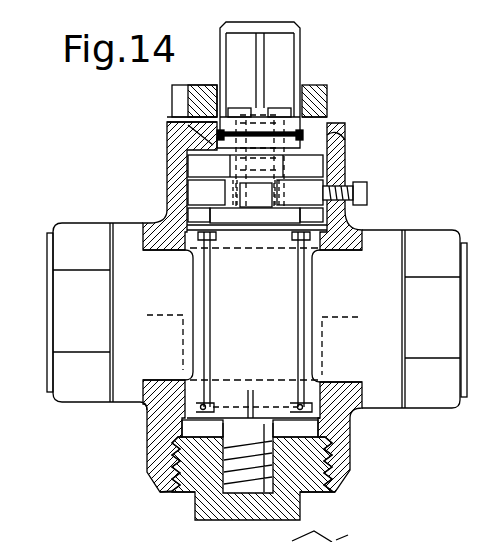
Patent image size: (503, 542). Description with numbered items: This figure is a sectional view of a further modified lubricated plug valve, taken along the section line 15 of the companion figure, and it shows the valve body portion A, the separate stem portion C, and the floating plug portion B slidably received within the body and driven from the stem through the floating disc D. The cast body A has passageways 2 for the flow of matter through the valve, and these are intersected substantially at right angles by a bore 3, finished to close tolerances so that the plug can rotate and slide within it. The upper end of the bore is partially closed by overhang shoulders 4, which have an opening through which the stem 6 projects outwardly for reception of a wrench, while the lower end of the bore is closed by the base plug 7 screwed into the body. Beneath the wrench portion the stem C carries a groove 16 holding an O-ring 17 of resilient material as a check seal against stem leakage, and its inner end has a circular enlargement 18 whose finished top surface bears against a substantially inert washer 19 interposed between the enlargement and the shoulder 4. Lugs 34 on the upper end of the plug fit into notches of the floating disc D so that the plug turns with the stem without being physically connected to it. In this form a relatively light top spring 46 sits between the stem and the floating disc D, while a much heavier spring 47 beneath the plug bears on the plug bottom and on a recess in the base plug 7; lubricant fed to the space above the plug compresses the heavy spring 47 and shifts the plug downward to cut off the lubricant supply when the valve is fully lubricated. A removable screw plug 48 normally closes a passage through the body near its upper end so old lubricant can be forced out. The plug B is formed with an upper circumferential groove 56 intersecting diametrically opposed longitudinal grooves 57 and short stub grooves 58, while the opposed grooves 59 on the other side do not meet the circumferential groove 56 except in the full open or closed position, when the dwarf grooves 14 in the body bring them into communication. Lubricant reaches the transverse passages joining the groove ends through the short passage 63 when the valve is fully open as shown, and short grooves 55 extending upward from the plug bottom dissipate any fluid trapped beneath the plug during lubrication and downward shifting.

The passageways 2 is at (252, 316).
The bore 3 is at (345, 165).
The overhang shoulders 4 is at (213, 145).
The stem 6 is at (301, 57).
The base plug 7 is at (304, 517).
The dwarf grooves 14 is at (216, 238).
The section line 15 is at (46, 310).
The groove 16 is at (183, 118).
The O-ring 17 is at (328, 124).
The circular enlargement 18 is at (255, 153).
The washer 19 is at (185, 157).
The lugs 34 is at (233, 193).
The top spring 46 is at (283, 108).
The spring 47 is at (222, 431).
The screw plug 48 is at (368, 191).
The short grooves 55 is at (254, 400).
The upper circumferential groove 56 is at (277, 236).
The longitudinal grooves 57 is at (300, 319).
The short stub grooves 58 is at (226, 221).
The grooves 59 is at (208, 330).
The passage 63 is at (295, 429).
The body portion A is at (350, 226).
The floating plug portion B is at (251, 273).
The stem portion C is at (241, 75).
The floating disc D is at (300, 192).